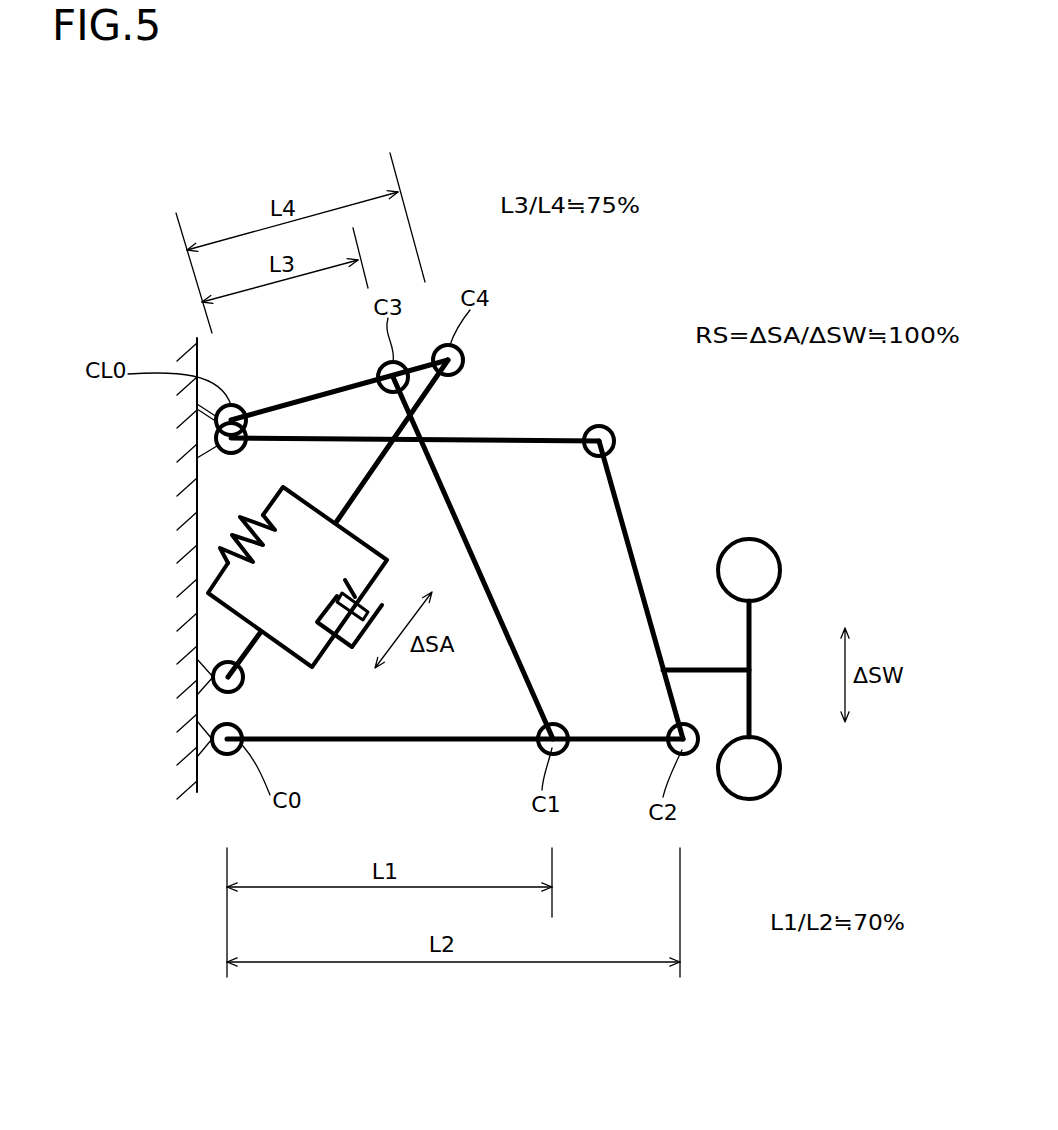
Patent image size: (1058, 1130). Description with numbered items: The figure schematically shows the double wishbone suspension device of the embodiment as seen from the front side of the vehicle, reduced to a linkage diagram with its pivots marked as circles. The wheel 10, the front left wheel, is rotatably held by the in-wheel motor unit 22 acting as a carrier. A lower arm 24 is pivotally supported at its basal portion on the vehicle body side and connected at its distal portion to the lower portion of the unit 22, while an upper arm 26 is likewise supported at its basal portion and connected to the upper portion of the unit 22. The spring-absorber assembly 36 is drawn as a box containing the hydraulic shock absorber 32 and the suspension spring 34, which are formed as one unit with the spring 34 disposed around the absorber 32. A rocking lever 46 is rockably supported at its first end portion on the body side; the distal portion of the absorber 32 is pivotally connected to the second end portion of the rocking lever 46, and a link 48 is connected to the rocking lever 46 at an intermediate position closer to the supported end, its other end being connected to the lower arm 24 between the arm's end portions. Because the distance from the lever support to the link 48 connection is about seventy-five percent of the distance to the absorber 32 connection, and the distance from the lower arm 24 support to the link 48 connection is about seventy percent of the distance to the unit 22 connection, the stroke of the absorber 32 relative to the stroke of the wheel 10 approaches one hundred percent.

The wheel 10 is at (779, 566).
The in-wheel motor unit 22 is at (636, 547).
The lower arm 24 is at (440, 742).
The upper arm 26 is at (485, 441).
The hydraulic shock absorber 32 is at (336, 627).
The suspension spring 34 is at (231, 542).
The spring-absorber assembly 36 is at (214, 589).
The rocking lever 46 is at (307, 398).
The link 48 is at (474, 547).